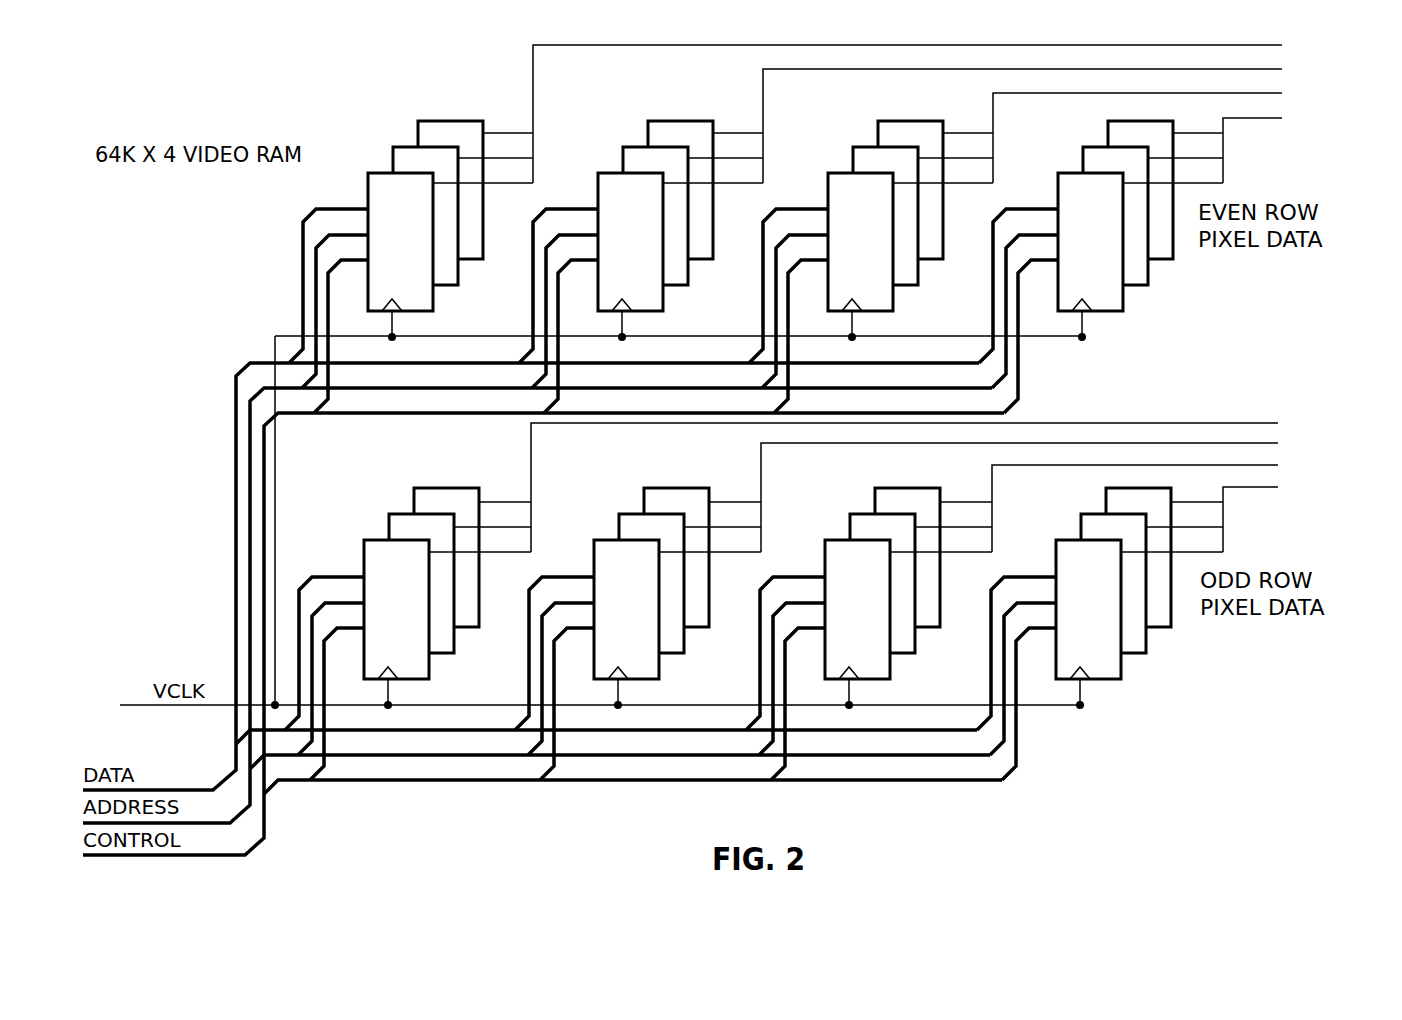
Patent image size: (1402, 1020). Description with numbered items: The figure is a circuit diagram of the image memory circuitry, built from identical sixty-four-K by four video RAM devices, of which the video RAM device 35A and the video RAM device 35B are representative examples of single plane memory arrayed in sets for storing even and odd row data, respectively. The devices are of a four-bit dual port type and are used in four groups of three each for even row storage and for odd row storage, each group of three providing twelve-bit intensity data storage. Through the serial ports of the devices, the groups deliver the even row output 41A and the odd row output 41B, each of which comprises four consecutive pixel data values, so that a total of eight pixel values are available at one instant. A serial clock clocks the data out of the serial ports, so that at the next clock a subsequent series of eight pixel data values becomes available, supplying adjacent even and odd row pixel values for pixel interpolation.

The video RAM device 35A is at (367, 197).
The video RAM device 35B is at (393, 156).
The even row output 41A is at (1318, 83).
The odd row output 41B is at (1315, 453).